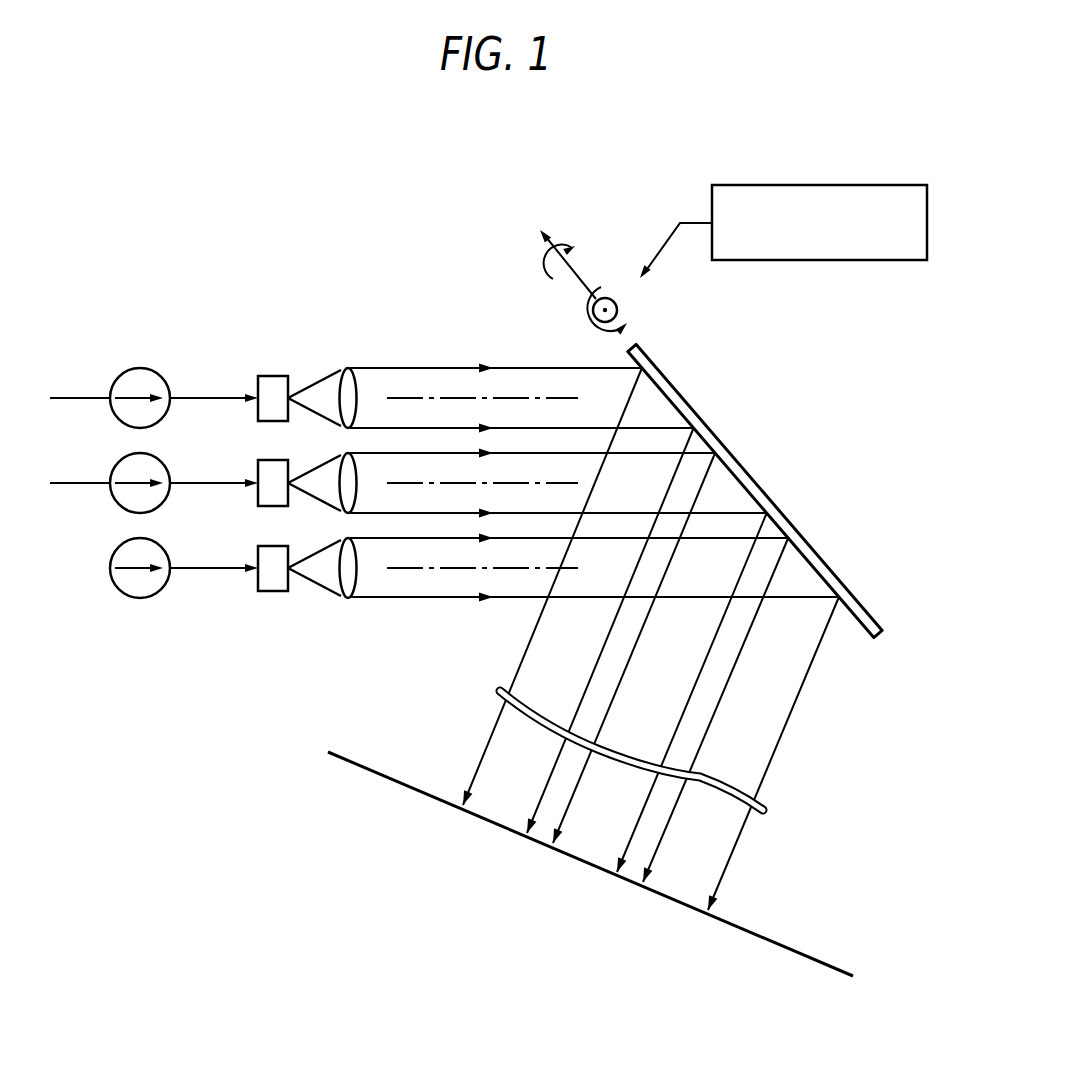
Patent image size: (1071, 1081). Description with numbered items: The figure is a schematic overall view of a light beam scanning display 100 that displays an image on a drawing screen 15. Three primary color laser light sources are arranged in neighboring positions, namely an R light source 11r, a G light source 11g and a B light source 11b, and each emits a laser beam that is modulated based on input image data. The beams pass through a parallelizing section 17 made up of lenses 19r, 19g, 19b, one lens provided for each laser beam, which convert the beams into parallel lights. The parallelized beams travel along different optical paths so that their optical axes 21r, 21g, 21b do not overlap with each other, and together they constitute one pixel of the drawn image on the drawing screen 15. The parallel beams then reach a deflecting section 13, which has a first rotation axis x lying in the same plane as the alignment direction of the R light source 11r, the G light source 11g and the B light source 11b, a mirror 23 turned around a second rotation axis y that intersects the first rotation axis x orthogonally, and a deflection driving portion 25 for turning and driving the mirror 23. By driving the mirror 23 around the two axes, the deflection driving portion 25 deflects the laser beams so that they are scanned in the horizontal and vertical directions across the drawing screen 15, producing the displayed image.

The light beam scanning display 100 is at (355, 206).
The R light source 11r is at (270, 375).
The G light source 11g is at (258, 462).
The B light source 11b is at (270, 592).
The deflecting section 13 is at (650, 179).
The drawing screen 15 is at (748, 932).
The parallelizing section 17 is at (377, 326).
The lens 19r is at (348, 369).
The lens 19g is at (345, 455).
The lens 19b is at (343, 597).
The optical axis 21r is at (462, 397).
The optical axis 21g is at (407, 483).
The optical axis 21b is at (432, 570).
The mirror 23 is at (688, 392).
The deflection driving portion 25 is at (815, 185).